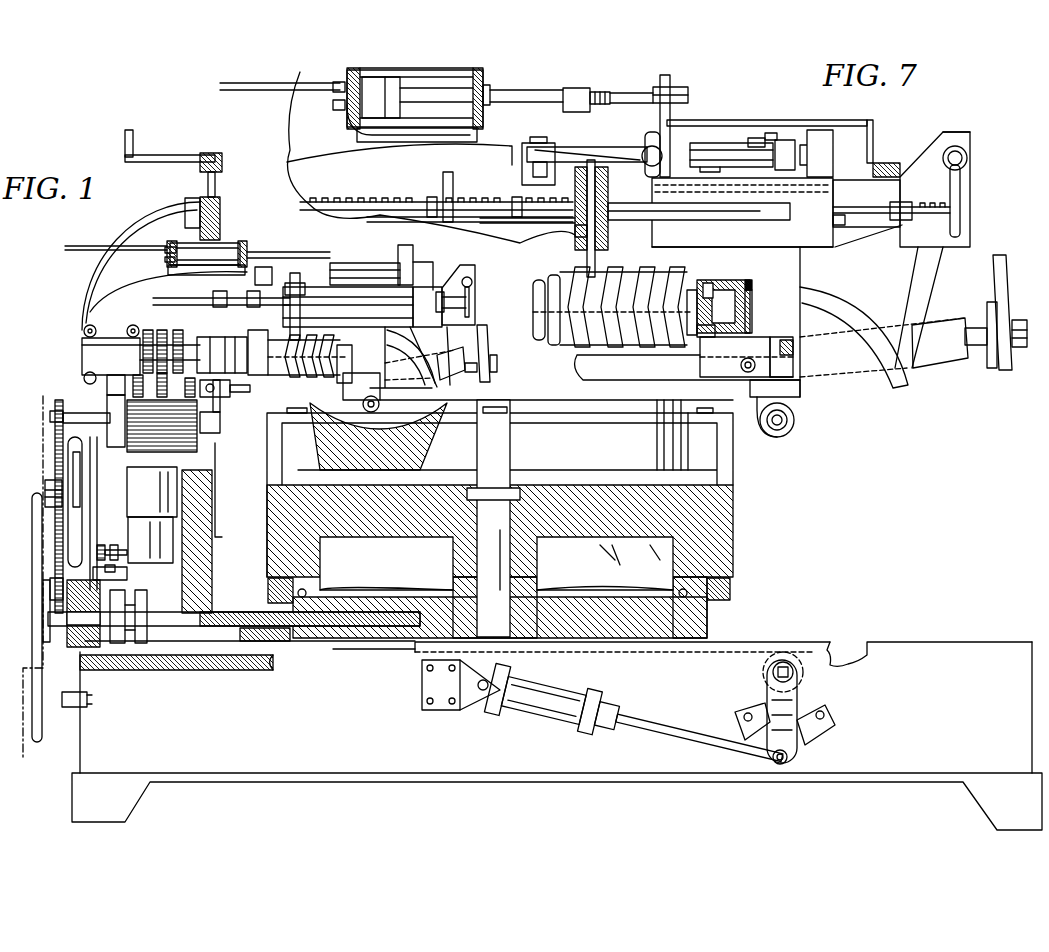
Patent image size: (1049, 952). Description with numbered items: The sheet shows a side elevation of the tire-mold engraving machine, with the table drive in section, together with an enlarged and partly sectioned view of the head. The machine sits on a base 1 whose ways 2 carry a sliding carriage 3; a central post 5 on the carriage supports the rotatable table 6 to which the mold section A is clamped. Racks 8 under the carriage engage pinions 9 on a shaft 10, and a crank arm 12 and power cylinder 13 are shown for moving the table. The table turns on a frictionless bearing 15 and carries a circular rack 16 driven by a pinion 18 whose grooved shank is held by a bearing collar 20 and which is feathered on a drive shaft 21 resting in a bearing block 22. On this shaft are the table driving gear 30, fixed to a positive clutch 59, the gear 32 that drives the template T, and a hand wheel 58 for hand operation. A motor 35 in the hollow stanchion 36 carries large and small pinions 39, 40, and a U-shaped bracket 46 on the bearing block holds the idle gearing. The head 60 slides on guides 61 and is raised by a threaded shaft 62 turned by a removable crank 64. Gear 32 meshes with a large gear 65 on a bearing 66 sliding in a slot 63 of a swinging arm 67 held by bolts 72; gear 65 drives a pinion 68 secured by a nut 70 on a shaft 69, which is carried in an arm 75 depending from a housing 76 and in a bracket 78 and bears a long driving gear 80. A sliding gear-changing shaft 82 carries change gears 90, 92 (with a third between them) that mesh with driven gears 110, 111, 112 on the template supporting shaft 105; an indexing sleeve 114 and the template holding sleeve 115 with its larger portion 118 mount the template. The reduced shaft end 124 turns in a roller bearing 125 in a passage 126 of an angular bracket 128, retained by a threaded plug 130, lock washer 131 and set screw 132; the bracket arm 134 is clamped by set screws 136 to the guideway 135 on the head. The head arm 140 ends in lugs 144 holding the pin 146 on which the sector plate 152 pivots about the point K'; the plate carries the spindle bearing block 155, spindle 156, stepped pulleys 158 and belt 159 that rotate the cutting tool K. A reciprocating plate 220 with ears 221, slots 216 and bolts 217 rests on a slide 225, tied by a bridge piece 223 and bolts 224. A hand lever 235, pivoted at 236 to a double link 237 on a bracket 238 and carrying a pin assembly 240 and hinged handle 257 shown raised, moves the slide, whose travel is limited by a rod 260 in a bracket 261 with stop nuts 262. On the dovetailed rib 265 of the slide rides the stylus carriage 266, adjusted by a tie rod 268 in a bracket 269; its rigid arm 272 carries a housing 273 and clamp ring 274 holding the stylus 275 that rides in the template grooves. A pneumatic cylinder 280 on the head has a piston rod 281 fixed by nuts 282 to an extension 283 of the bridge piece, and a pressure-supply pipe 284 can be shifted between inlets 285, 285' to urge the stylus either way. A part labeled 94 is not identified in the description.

In FIG. 1, the base 1 is at (965, 652).
In FIG. 1, the ways 2 is at (915, 642).
In FIG. 1, the carriage 3 is at (707, 617).
In FIG. 1, the post 5 is at (505, 553).
In FIG. 1, the rotatable table 6 is at (733, 505).
In FIG. 1, the racks 8 is at (830, 642).
In FIG. 1, the pinions 9 is at (763, 670).
In FIG. 1, the shaft 10 is at (773, 676).
In FIG. 1, the crank arm 12 is at (40, 756).
In FIG. 1, the power cylinder 13 is at (570, 690).
In FIG. 1, the frictionless bearing 15 is at (680, 592).
In FIG. 1, the circular rack 16 is at (730, 588).
In FIG. 1, the pinion 18 is at (278, 660).
In FIG. 1, the bearing collar 20 is at (270, 585).
In FIG. 1, the drive shaft 21 is at (158, 612).
In FIG. 1, the bearing block 22 is at (80, 647).
In FIG. 1, the table driving gear 30 is at (120, 580).
In FIG. 1, the gear 32 is at (45, 598).
In FIG. 1, the motor 35 is at (127, 492).
In FIG. 1, the hollow stanchion 36 is at (212, 540).
In FIG. 7, the hollow stanchion 36 is at (430, 68).
In FIG. 1, the large pinion 39 is at (100, 545).
In FIG. 1, the small pinion 40 is at (114, 545).
In FIG. 1, the U-shaped bracket 46 is at (115, 568).
In FIG. 1, the hand wheel 58 is at (42, 732).
In FIG. 1, the positive clutch 59 is at (120, 670).
In FIG. 1, the head 60 is at (115, 303).
In FIG. 7, the head 60 is at (800, 270).
In FIG. 1, the guides 61 is at (222, 487).
In FIG. 1, the threaded shaft 62 is at (220, 212).
In FIG. 1, the slot 63 is at (80, 470).
In FIG. 1, the removable crank 64 is at (210, 153).
In FIG. 1, the large gear 65 is at (55, 456).
In FIG. 1, the bearing 66 is at (46, 486).
In FIG. 1, the swinging arm 67 is at (82, 450).
In FIG. 1, the pinion 68 is at (50, 423).
In FIG. 1, the shaft 69 is at (220, 425).
In FIG. 1, the nut 70 is at (50, 415).
In FIG. 1, the bolts 72 is at (50, 585).
In FIG. 1, the arm 75 is at (108, 402).
In FIG. 1, the housing 76 is at (112, 338).
In FIG. 1, the bracket 78 is at (220, 405).
In FIG. 1, the long driving gear 80 is at (197, 448).
In FIG. 1, the sliding gear-changing shaft 82 is at (107, 390).
In FIG. 1, the intermediate change gear 90 is at (133, 375).
In FIG. 1, the intermediate change gear 92 is at (190, 380).
In FIG. 1, the block 94 is at (250, 388).
In FIG. 1, the template supporting shaft 105 is at (205, 340).
In FIG. 7, the template supporting shaft 105 is at (535, 290).
In FIG. 1, the driven gear 110 is at (148, 330).
In FIG. 1, the driven gear 111 is at (165, 330).
In FIG. 1, the driven gear 112 is at (182, 336).
In FIG. 1, the indexing sleeve 114 is at (195, 378).
In FIG. 1, the template holding sleeve 115 is at (258, 330).
In FIG. 7, the larger portion of the sleeve 118 is at (550, 280).
In FIG. 7, the reduced end of the shaft 124 is at (712, 340).
In FIG. 7, the roller bearing 125 is at (715, 285).
In FIG. 7, the passage 126 is at (705, 280).
In FIG. 7, the angular bracket 128 is at (718, 377).
In FIG. 7, the threaded plug 130 is at (752, 300).
In FIG. 7, the lock washer 131 is at (740, 333).
In FIG. 7, the set screw 132 is at (752, 283).
In FIG. 7, the forwardly extending arm 134 is at (793, 348).
In FIG. 7, the guideway 135 is at (793, 365).
In FIG. 7, the set screws 136 is at (785, 340).
In FIG. 7, the arm 140 is at (800, 392).
In FIG. 7, the lugs 144 is at (790, 430).
In FIG. 7, the pin 146 is at (787, 420).
In FIG. 1, the plate 152 is at (430, 385).
In FIG. 7, the plate 152 is at (880, 385).
In FIG. 1, the spindle bearing block 155 is at (450, 355).
In FIG. 7, the spindle bearing block 155 is at (940, 358).
In FIG. 1, the spindle 156 is at (477, 363).
In FIG. 7, the spindle 156 is at (975, 328).
In FIG. 1, the stepped pulleys 158 is at (497, 368).
In FIG. 7, the stepped pulleys 158 is at (1012, 360).
In FIG. 1, the belt 159 is at (487, 328).
In FIG. 7, the belt 159 is at (995, 285).
In FIG. 1, the long slots 216 is at (470, 290).
In FIG. 7, the long slots 216 is at (960, 180).
In FIG. 7, the bolts 217 is at (660, 150).
In FIG. 1, the reciprocating plate 220 is at (475, 275).
In FIG. 7, the reciprocating plate 220 is at (970, 212).
In FIG. 7, the upstanding ears 221 is at (650, 135).
In FIG. 1, the bridge piece 223 is at (433, 268).
In FIG. 7, the bridge piece 223 is at (870, 122).
In FIG. 7, the bolts 224 is at (885, 163).
In FIG. 1, the slide 225 is at (428, 333).
In FIG. 7, the slide 225 is at (855, 240).
In FIG. 7, the hand lever 235 is at (775, 133).
In FIG. 7, the pivot 236 is at (758, 138).
In FIG. 1, the double link 237 is at (355, 263).
In FIG. 7, the double link 237 is at (710, 143).
In FIG. 1, the bracket 238 is at (265, 267).
In FIG. 7, the bracket 238 is at (545, 147).
In FIG. 7, the pin assembly 240 is at (790, 140).
In FIG. 1, the swinging operating handle 257 is at (413, 258).
In FIG. 7, the swinging operating handle 257 is at (822, 130).
In FIG. 1, the rod 260 is at (185, 298).
In FIG. 7, the rod 260 is at (540, 202).
In FIG. 7, the bracket 261 is at (453, 177).
In FIG. 7, the nuts 262 is at (430, 197).
In FIG. 7, the dovetailed rib 265 is at (845, 222).
In FIG. 1, the carriage 266 is at (420, 327).
In FIG. 7, the carriage 266 is at (790, 247).
In FIG. 7, the tie rod 268 is at (870, 207).
In FIG. 7, the bracket 269 is at (900, 190).
In FIG. 1, the rigid arm 272 is at (370, 320).
In FIG. 7, the rigid arm 272 is at (755, 220).
In FIG. 7, the housing 273 is at (608, 170).
In FIG. 7, the clamp ring 274 is at (575, 230).
In FIG. 1, the stylus 275 is at (300, 318).
In FIG. 7, the stylus 275 is at (595, 252).
In FIG. 1, the pneumatic cylinder 280 is at (240, 243).
In FIG. 7, the pneumatic cylinder 280 is at (470, 70).
In FIG. 1, the piston rod 281 is at (300, 252).
In FIG. 7, the piston rod 281 is at (615, 92).
In FIG. 7, the nuts 282 is at (667, 75).
In FIG. 7, the extension 283 is at (690, 120).
In FIG. 1, the pressure-supply pipe 284 is at (80, 246).
In FIG. 7, the pressure-supply pipe 284 is at (240, 83).
In FIG. 1, the inlet 285 is at (163, 237).
In FIG. 7, the inlet 285 is at (326, 66).
In FIG. 1, the inlet 285' is at (150, 262).
In FIG. 7, the inlet 285' is at (303, 104).
In FIG. 1, the mold section A is at (538, 408).
In FIG. 1, the cutting tool K is at (378, 435).
In FIG. 1, the pivot point K' is at (382, 404).
In FIG. 7, the pivot point K' is at (772, 430).
In FIG. 1, the template T is at (330, 342).
In FIG. 7, the template T is at (640, 270).